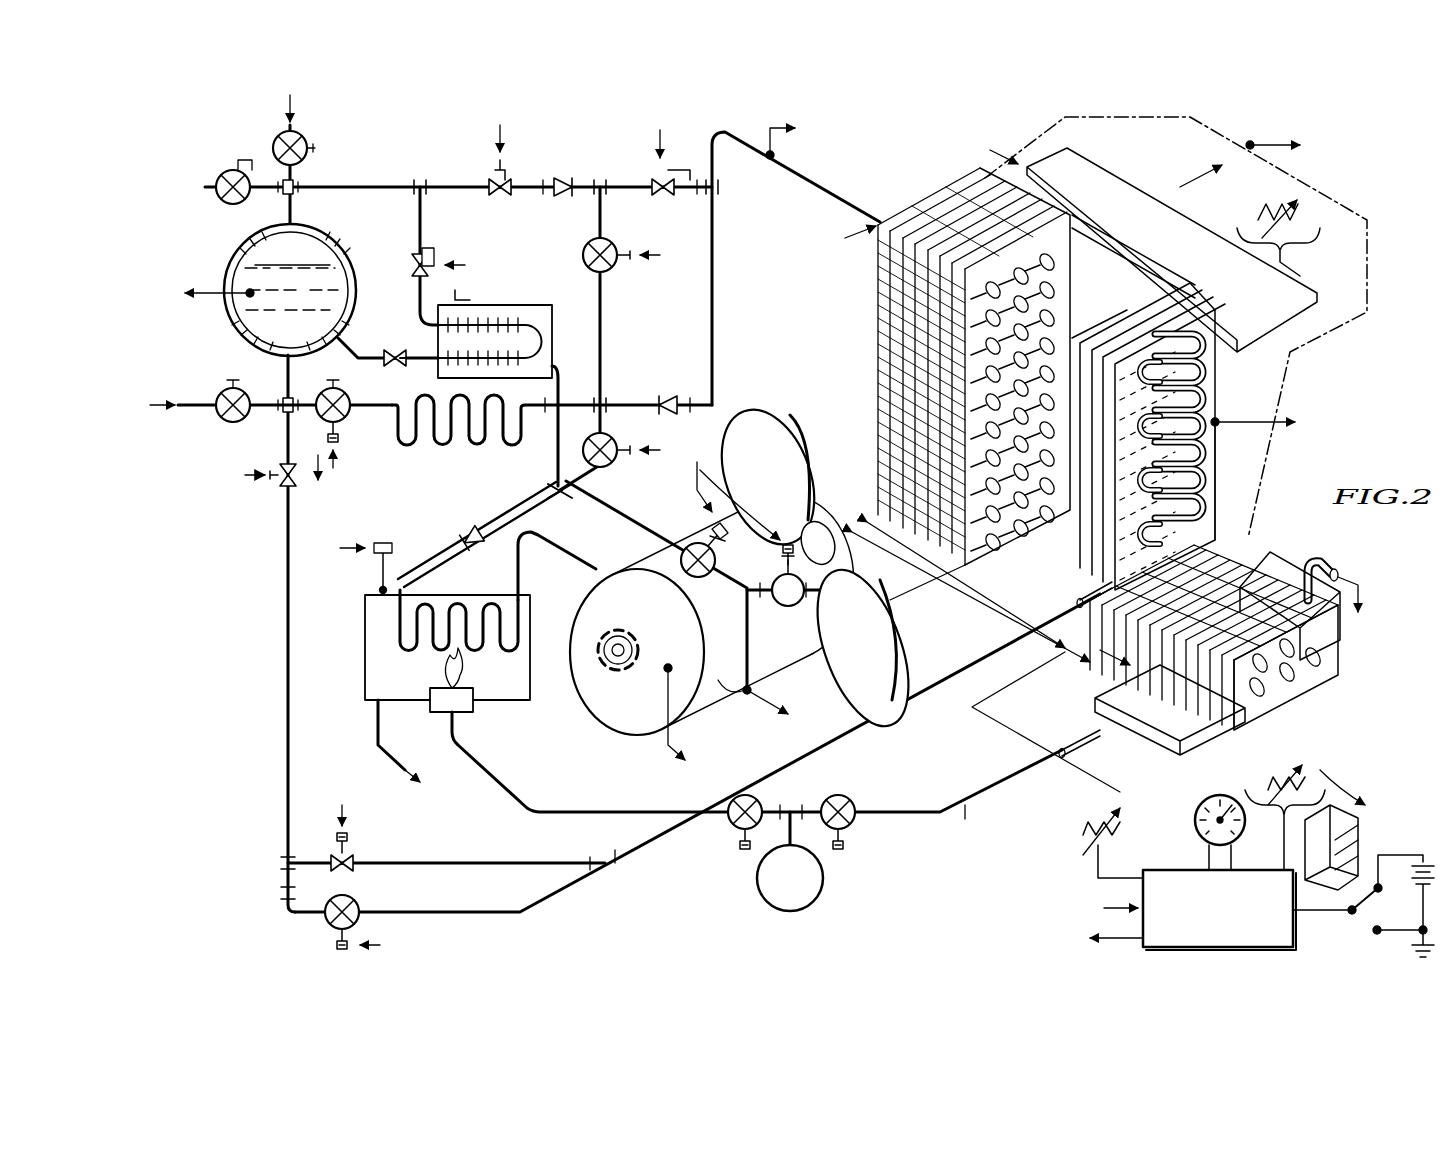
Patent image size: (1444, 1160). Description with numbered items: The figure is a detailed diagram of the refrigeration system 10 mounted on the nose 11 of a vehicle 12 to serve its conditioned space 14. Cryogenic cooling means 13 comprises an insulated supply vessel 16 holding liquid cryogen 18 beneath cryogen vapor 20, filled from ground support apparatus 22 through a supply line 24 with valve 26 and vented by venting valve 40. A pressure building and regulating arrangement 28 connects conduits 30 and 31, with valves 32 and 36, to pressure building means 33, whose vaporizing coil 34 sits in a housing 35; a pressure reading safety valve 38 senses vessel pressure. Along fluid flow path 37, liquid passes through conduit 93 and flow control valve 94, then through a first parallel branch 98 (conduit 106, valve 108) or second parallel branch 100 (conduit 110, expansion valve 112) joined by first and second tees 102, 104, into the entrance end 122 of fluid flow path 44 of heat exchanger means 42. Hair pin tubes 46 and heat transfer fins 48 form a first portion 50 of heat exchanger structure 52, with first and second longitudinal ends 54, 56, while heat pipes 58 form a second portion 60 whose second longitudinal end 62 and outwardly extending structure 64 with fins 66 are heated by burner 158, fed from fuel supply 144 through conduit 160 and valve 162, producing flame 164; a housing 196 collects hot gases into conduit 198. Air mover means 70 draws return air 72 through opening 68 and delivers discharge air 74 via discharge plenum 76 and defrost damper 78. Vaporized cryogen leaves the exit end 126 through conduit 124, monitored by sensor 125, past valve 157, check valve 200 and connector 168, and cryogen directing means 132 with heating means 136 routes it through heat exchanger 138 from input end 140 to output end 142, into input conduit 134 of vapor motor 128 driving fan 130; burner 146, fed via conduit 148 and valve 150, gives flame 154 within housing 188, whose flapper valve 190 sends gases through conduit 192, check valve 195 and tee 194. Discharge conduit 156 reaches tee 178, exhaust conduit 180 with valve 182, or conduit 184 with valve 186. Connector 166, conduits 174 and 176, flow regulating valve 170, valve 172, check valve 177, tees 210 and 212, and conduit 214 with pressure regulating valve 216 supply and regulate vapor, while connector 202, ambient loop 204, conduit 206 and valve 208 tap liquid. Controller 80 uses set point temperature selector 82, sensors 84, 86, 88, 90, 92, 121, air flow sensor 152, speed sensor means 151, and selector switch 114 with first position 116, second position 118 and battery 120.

The refrigeration system 10 is at (704, 886).
The nose 11 is at (1325, 908).
The vehicle 12 is at (1215, 859).
The cryogenic cooling means 13 is at (280, 278).
The conditioned space 14 is at (1370, 196).
The supply vessel 16 is at (240, 330).
The liquid cryogen 18 is at (310, 255).
The cryogen vapor 20 is at (268, 248).
The ground support apparatus 22 is at (175, 402).
The supply line 24 is at (293, 385).
The valve 26 is at (222, 396).
The pressure building and regulating arrangement 28 is at (500, 293).
The conduit 30 is at (350, 352).
The conduit 31 is at (320, 187).
The valve 32 is at (390, 366).
The pressure building means 33 is at (540, 302).
The vaporizing coil 34 is at (505, 322).
The housing 35 is at (499, 324).
The valve 36 is at (410, 272).
The fluid flow path 37 is at (301, 479).
The pressure reading safety valve 38 is at (226, 172).
The venting valve 40 is at (302, 135).
The heat exchanger means 42 is at (1122, 301).
The fluid flow path 44 is at (1090, 585).
The hair pin tubes 46 is at (1203, 395).
The heat transfer fins 48 is at (942, 358).
The first portion 50 is at (1190, 436).
The heat exchanger structure 52 is at (962, 358).
The first longitudinal end 54 is at (876, 333).
The second longitudinal end 56 is at (1165, 436).
The heat pipes 58 is at (1282, 680).
The second portion 60 is at (1340, 672).
The second longitudinal end 62 is at (1250, 705).
The outwardly extending structure 64 is at (1235, 626).
The heat transfer fins 66 is at (970, 570).
The opening 68 is at (1320, 815).
The air mover means 70 is at (894, 584).
The return air 72 is at (1355, 775).
The discharge air 74 is at (1182, 183).
The discharge plenum 76 is at (1340, 330).
The defrost damper 78 is at (1088, 170).
The controller 80 is at (1160, 870).
The set point temperature selector 82 is at (1196, 826).
The return air temperature sensor 84 is at (1262, 785).
The discharge air temperature sensor 86 is at (1256, 218).
The temperature sensor 88 is at (1222, 418).
The ambient air temperature sensor 90 is at (1088, 825).
The temperature sensor 92 is at (748, 697).
The conduit 93 is at (285, 570).
The flow control valve 94 is at (270, 490).
The first parallel branch 98 is at (555, 892).
The second parallel branch 100 is at (493, 866).
The first tee 102 is at (282, 862).
The second tee 104 is at (605, 858).
The conduit 106 is at (280, 908).
The valve 108 is at (338, 896).
The conduit 110 is at (328, 862).
The expansion valve 112 is at (355, 862).
The selector switch 114 is at (1378, 893).
The first position 116 is at (1378, 880).
The second position 118 is at (1374, 932).
The battery 120 is at (1423, 866).
The sensor 121 is at (247, 296).
The entrance end 122 is at (1113, 560).
The conduit 124 is at (714, 132).
The sensor 125 is at (775, 157).
The exit end 126 is at (845, 240).
The vapor motor 128 is at (695, 627).
The fan 130 is at (778, 455).
The cryogen directing means 132 is at (512, 574).
The input conduit 134 is at (562, 546).
The heating means 136 is at (446, 650).
The heat exchanger 138 is at (502, 650).
The input end 140 is at (459, 630).
The output end 142 is at (520, 588).
The fuel supply 144 is at (824, 878).
The burner 146 is at (465, 712).
The conduit 148 is at (518, 810).
The valve 150 is at (752, 800).
The speed sensor means 151 is at (666, 672).
The air flow sensor 152 is at (1250, 140).
The flame 154 is at (445, 672).
The conduit 156 is at (720, 700).
The valve 157 is at (610, 440).
The burner 158 is at (1128, 738).
The conduit 160 is at (990, 792).
The valve 162 is at (853, 792).
The flame 164 is at (1125, 680).
The connector 166 is at (420, 182).
The connector 168 is at (603, 398).
The flow regulating valve 170 is at (490, 178).
The valve 172 is at (612, 242).
The conduit 174 is at (542, 174).
The conduit 176 is at (596, 212).
The check valve 177 is at (560, 176).
The tee 178 is at (740, 598).
The exhaust conduit 180 is at (808, 600).
The valve 182 is at (775, 608).
The conduit 184 is at (612, 520).
The valve 186 is at (690, 578).
The housing 188 is at (365, 640).
The flapper valve 190 is at (405, 533).
The conduit 192 is at (518, 508).
The tee 194 is at (552, 488).
The check valve 195 is at (466, 526).
The housing 196 is at (1275, 565).
The conduit 198 is at (383, 757).
The check valve 200 is at (674, 396).
The connector 202 is at (286, 418).
The ambient loop 204 is at (412, 445).
The conduit 206 is at (363, 410).
The valve 208 is at (340, 445).
The tee 210 is at (600, 180).
The tee 212 is at (708, 192).
The conduit 214 is at (655, 178).
The pressure regulating valve 216 is at (660, 160).